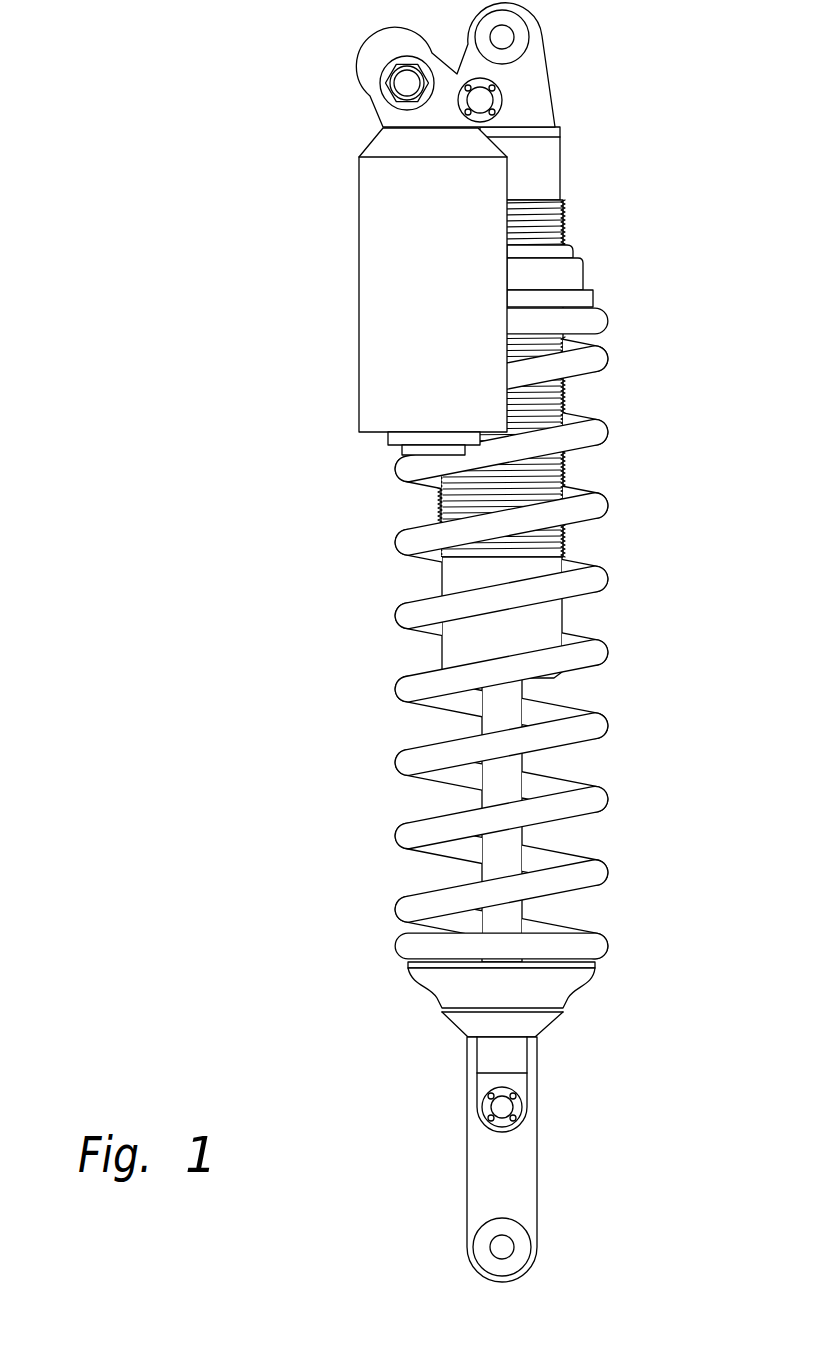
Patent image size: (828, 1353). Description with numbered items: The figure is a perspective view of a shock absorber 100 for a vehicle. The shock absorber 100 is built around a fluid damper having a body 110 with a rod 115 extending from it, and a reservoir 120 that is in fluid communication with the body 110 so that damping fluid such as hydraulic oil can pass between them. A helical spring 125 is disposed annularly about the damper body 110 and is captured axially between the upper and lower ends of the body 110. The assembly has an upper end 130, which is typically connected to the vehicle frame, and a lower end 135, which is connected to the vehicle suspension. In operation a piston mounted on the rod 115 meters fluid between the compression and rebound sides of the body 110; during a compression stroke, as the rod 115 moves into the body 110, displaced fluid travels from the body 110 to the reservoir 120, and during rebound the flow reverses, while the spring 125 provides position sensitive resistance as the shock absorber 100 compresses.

The shock absorber 100 is at (186, 136).
The body 110 is at (563, 616).
The rod 115 is at (523, 837).
The reservoir 120 is at (358, 296).
The helical spring 125 is at (610, 725).
The upper end 130 is at (534, 30).
The lower end 135 is at (538, 1240).